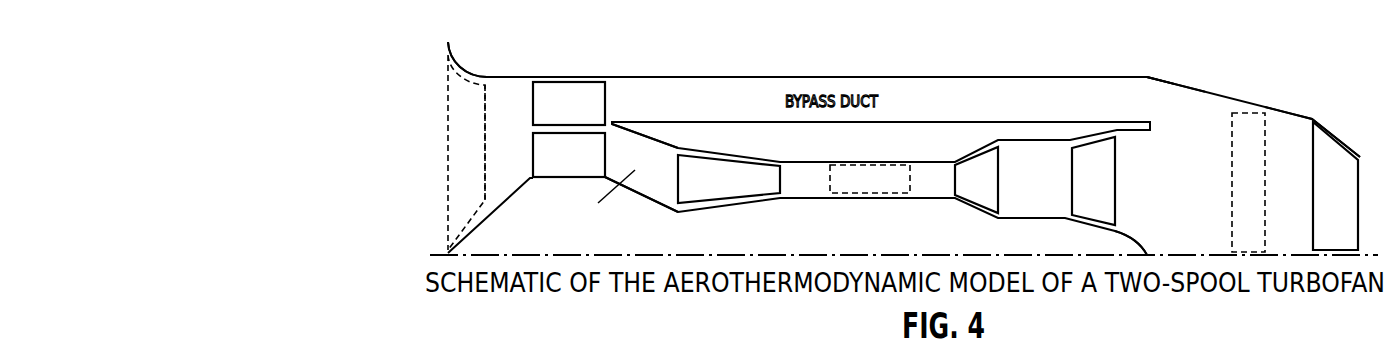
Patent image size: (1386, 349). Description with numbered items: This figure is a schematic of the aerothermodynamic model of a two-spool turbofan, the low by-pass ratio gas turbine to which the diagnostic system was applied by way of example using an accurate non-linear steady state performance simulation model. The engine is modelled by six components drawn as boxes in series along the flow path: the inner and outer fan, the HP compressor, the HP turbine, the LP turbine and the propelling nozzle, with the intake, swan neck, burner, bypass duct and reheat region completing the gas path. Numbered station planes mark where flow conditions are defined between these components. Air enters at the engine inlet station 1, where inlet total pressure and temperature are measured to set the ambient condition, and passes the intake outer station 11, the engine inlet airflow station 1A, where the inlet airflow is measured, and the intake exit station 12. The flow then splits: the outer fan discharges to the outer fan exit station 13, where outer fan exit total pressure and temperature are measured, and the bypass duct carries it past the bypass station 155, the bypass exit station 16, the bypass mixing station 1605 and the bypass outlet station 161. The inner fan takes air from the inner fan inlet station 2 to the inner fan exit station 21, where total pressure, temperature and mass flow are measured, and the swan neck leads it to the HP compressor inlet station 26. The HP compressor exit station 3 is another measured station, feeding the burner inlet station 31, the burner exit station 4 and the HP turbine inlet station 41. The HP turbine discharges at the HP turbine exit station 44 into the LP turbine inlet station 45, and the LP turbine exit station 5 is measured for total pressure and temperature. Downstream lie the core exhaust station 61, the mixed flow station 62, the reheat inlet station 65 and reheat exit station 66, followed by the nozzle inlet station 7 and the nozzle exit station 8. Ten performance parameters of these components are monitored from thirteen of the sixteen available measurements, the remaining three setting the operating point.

The engine inlet station 1 is at (473, 152).
The intake outer station 11 is at (490, 78).
The engine inlet airflow station 1A is at (494, 142).
The fan outer inlet station 12 is at (560, 103).
The outer fan exit station 13 is at (652, 99).
The fan inner inlet station 2 is at (562, 155).
The inner fan exit station 21 is at (619, 175).
The HPC inlet station 26 is at (719, 179).
The HP compressor exit station 3 is at (805, 180).
The burner inlet station 31 is at (860, 179).
The burner exit station 4 is at (932, 180).
The HPT inlet station 41 is at (967, 180).
The HPT exit station 44 is at (1034, 179).
The LPT inlet station 45 is at (1083, 181).
The LP turbine exit station 5 is at (1132, 188).
The core exhaust station 61 is at (1161, 135).
The mixer exit station 62 is at (1190, 139).
The reheat inlet station 65 is at (1240, 182).
The reheat exit station 66 is at (1277, 150).
The nozzle inlet station 7 is at (1325, 153).
The nozzle exit station 8 is at (1345, 186).
The bypass duct station 155 is at (1000, 99).
The bypass duct exit station 16 is at (1080, 99).
The bypass mixing station 1605 is at (1130, 99).
The bypass outlet station 161 is at (1163, 103).